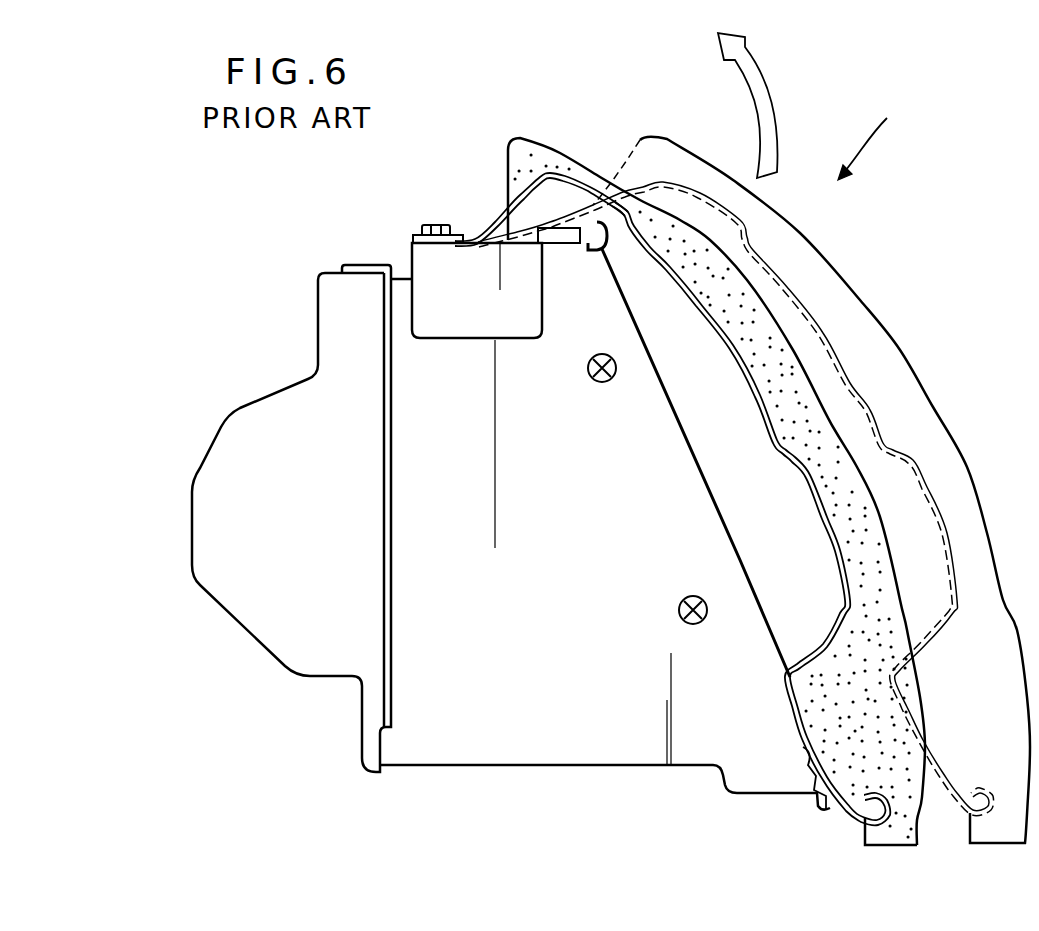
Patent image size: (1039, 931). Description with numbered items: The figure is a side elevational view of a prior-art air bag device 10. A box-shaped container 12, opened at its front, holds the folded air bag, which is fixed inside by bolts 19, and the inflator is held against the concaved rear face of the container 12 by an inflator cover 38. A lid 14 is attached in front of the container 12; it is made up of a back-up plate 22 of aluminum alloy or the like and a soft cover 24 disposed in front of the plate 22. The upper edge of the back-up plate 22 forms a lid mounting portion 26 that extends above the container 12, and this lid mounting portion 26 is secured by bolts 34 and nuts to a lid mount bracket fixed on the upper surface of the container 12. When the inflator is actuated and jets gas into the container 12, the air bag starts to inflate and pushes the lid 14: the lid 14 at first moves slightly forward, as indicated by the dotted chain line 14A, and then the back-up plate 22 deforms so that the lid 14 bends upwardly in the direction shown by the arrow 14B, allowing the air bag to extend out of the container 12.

The air bag device 10 is at (923, 126).
The container 12 is at (553, 750).
The lid 14 is at (558, 150).
The lid in slightly forward-moved position 14A is at (873, 317).
The arrow indicating upward bending of lid 14B is at (770, 75).
The bolts 19 is at (565, 243).
The back-up plate 22 is at (825, 512).
The soft cover 24 is at (898, 787).
The lid mounting portion 26 is at (470, 238).
The bolts 34 is at (433, 225).
The inflator cover 38 is at (210, 603).